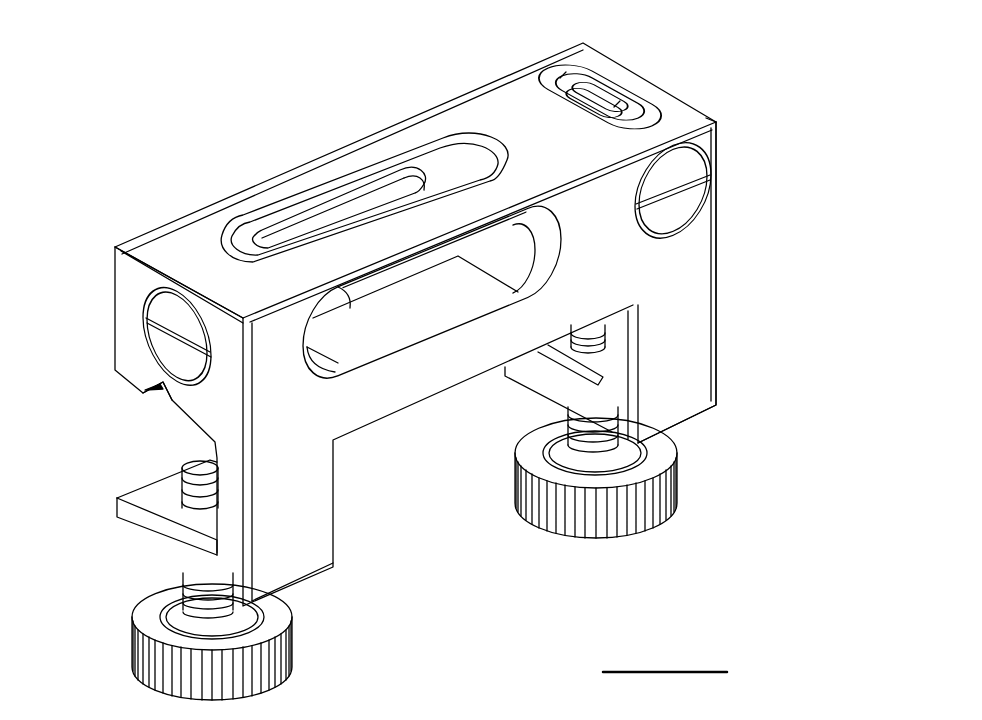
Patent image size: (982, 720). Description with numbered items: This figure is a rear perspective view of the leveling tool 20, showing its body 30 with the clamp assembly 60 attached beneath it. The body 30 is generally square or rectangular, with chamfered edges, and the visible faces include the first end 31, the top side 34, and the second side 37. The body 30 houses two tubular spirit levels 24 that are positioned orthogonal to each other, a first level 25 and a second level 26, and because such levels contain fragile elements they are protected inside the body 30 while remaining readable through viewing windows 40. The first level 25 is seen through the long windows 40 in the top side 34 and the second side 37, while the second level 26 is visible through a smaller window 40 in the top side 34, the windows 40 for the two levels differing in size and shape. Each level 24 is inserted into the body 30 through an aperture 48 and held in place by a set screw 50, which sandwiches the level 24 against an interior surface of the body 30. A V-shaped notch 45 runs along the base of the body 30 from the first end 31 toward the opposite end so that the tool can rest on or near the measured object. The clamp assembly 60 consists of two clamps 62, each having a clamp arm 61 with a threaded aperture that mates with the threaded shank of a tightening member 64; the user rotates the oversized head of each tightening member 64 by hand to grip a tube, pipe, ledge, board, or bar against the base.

The leveling tool 20 is at (823, 127).
The level 24 is at (300, 247).
The first level 25 is at (360, 213).
The second level 26 is at (603, 120).
The body 30 is at (482, 102).
The first end 31 is at (122, 347).
The top side 34 is at (172, 230).
The second side 37 is at (645, 260).
The viewing window 40 is at (398, 157).
The notch 45 is at (167, 398).
The aperture 48 is at (143, 318).
The set screw 50 is at (158, 305).
The clamp assembly 60 is at (485, 563).
The clamp arm 61 is at (127, 527).
The clamp 62 is at (365, 556).
The tightening member 64 is at (155, 600).